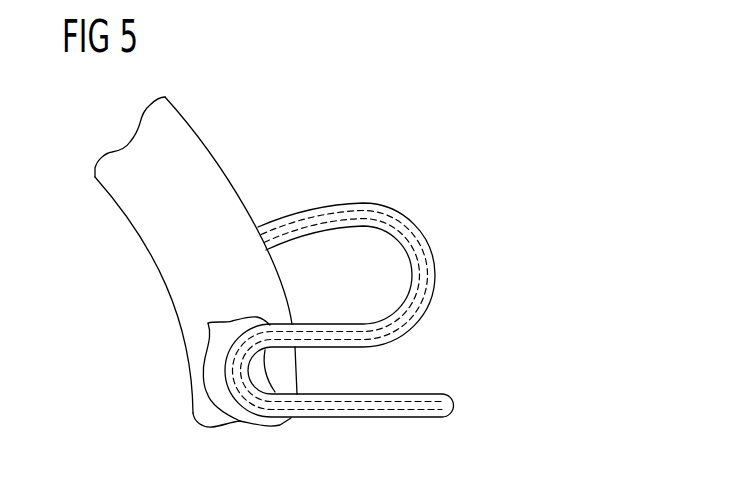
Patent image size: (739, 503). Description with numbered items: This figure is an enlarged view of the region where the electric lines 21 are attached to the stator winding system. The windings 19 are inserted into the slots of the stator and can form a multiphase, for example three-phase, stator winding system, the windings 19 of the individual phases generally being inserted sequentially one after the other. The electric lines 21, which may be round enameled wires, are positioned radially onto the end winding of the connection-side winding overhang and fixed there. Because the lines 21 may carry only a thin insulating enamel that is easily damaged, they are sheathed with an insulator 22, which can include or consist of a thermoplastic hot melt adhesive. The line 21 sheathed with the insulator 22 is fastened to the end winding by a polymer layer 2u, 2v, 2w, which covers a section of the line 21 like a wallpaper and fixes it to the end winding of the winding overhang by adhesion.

The windings 19 is at (200, 134).
The electric lines 21 is at (357, 216).
The insulator 22 is at (302, 212).
The polymer layer 2u is at (163, 369).
The polymer layer 2v is at (163, 369).
The polymer layer 2w is at (207, 348).